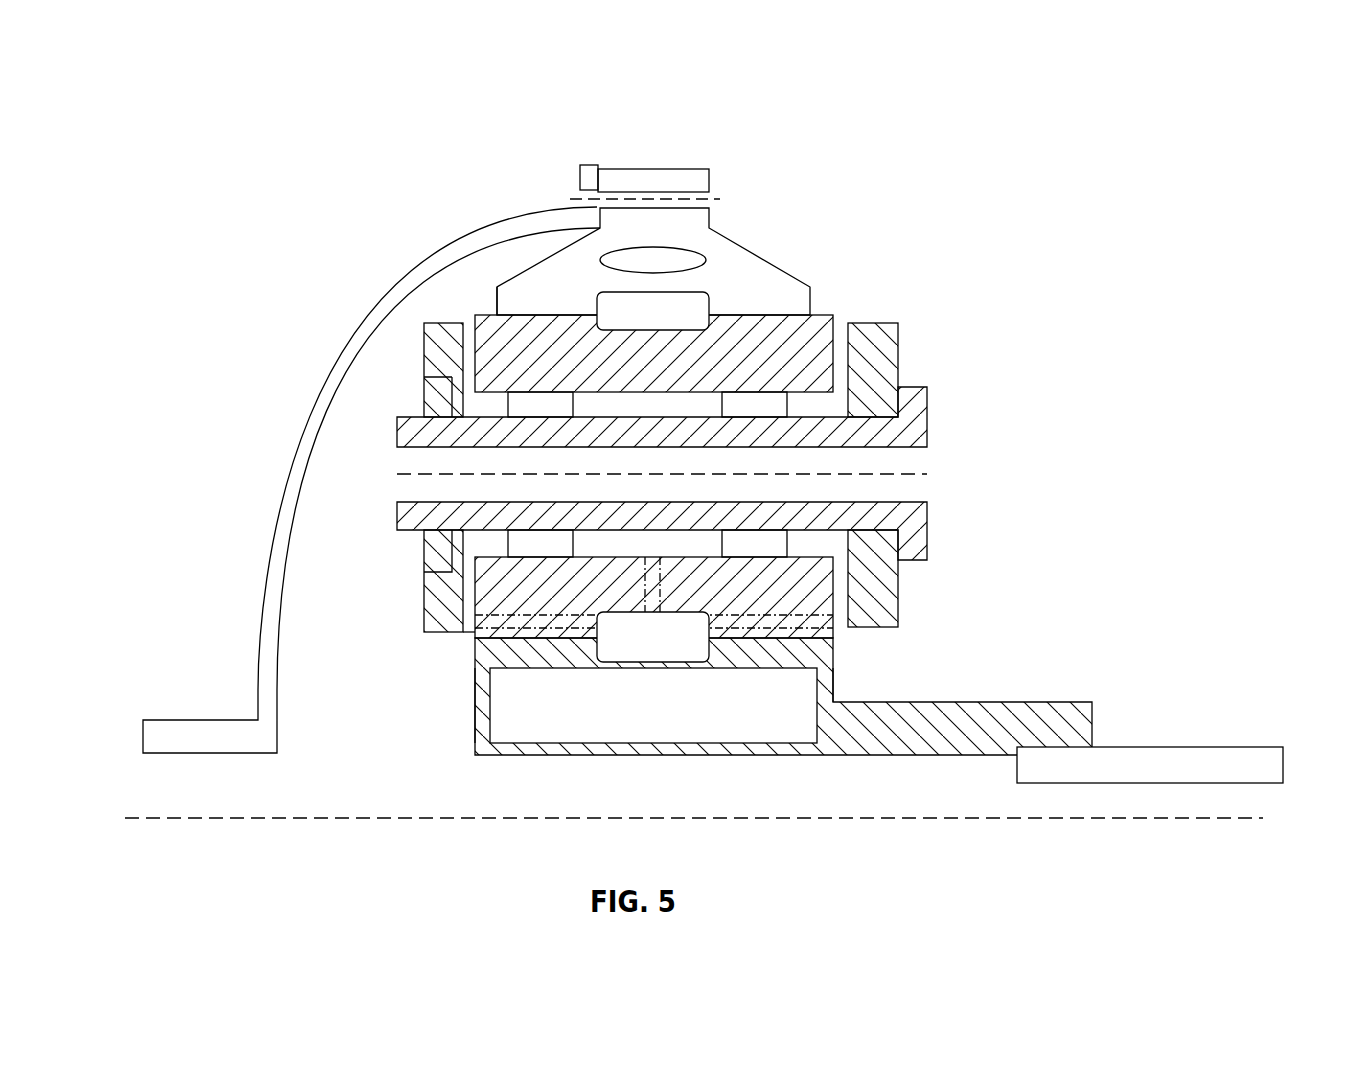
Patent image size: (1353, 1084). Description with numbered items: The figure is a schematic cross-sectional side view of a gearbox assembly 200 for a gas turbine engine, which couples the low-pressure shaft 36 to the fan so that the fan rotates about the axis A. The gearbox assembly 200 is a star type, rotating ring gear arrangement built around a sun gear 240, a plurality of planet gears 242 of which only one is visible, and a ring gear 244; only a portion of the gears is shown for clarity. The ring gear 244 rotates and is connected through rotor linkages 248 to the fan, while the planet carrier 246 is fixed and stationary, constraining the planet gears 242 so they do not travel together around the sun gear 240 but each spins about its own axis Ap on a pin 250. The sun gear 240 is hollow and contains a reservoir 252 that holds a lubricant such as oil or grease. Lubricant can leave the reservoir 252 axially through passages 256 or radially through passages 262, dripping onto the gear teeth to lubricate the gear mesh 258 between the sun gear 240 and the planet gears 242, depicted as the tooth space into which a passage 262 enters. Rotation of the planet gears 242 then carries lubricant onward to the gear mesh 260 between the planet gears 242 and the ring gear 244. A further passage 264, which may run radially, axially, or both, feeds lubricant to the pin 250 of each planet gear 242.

The gearbox assembly 200 is at (162, 115).
The rotor linkages 248 is at (280, 520).
The ring gear 244 is at (760, 258).
The gear mesh 260 is at (484, 300).
The planet gears 242 is at (818, 320).
The planet carrier 246 is at (422, 337).
The pin 250 is at (912, 423).
The planet gear axis Ap is at (922, 474).
The passage 264 is at (485, 615).
The sun gear 240 is at (473, 730).
The reservoir 252 is at (738, 715).
The passages 256 is at (480, 693).
The gear mesh 258 is at (464, 636).
The passages 262 is at (647, 662).
The low-pressure shaft 36 is at (1265, 783).
The axis A is at (1195, 820).